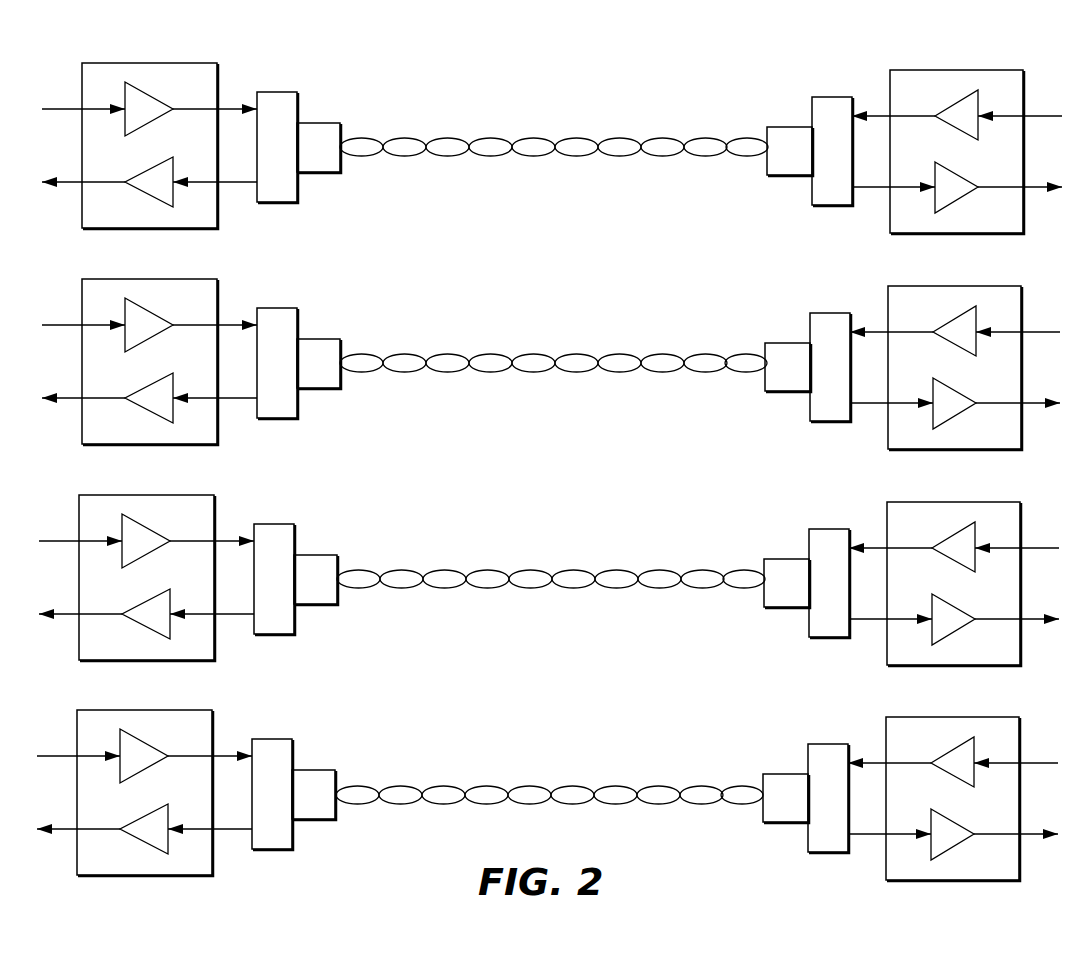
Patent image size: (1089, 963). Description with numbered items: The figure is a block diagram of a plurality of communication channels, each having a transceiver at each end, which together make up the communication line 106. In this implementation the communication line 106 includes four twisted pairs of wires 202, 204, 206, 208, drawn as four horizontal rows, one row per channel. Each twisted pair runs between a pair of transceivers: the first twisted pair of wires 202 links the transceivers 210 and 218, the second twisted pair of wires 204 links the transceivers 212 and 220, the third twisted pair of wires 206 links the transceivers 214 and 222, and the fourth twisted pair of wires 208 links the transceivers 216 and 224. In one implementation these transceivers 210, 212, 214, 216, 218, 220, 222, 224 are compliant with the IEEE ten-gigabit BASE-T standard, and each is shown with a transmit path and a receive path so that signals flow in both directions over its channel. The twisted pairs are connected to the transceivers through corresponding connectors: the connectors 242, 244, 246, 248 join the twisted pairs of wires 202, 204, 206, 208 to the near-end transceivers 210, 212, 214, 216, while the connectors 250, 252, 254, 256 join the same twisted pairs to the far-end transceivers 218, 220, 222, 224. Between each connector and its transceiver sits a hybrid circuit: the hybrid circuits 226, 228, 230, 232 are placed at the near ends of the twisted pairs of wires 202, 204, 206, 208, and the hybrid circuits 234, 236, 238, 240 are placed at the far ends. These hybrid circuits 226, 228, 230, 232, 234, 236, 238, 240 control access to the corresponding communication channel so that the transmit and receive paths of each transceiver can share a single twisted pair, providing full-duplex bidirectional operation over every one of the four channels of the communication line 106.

The communication line 106 is at (489, 40).
The twisted pair of wires 202 is at (548, 140).
The twisted pair of wires 204 is at (553, 338).
The twisted pair of wires 206 is at (551, 554).
The twisted pair of wires 208 is at (549, 770).
The transceiver 210 is at (131, 216).
The transceiver 212 is at (149, 362).
The transceiver 214 is at (146, 578).
The transceiver 216 is at (144, 793).
The transceiver 218 is at (1016, 224).
The transceiver 220 is at (955, 368).
The transceiver 222 is at (954, 584).
The transceiver 224 is at (953, 799).
The hybrid circuit 226 is at (277, 92).
The hybrid circuit 228 is at (256, 336).
The hybrid circuit 230 is at (253, 552).
The hybrid circuit 232 is at (251, 767).
The hybrid circuit 234 is at (832, 97).
The hybrid circuit 236 is at (809, 340).
The hybrid circuit 238 is at (808, 556).
The hybrid circuit 240 is at (807, 771).
The connector 242 is at (320, 123).
The connector 244 is at (337, 337).
The connector 246 is at (334, 553).
The connector 248 is at (332, 768).
The connector 250 is at (773, 127).
The connector 252 is at (762, 339).
The connector 254 is at (761, 555).
The connector 256 is at (760, 770).